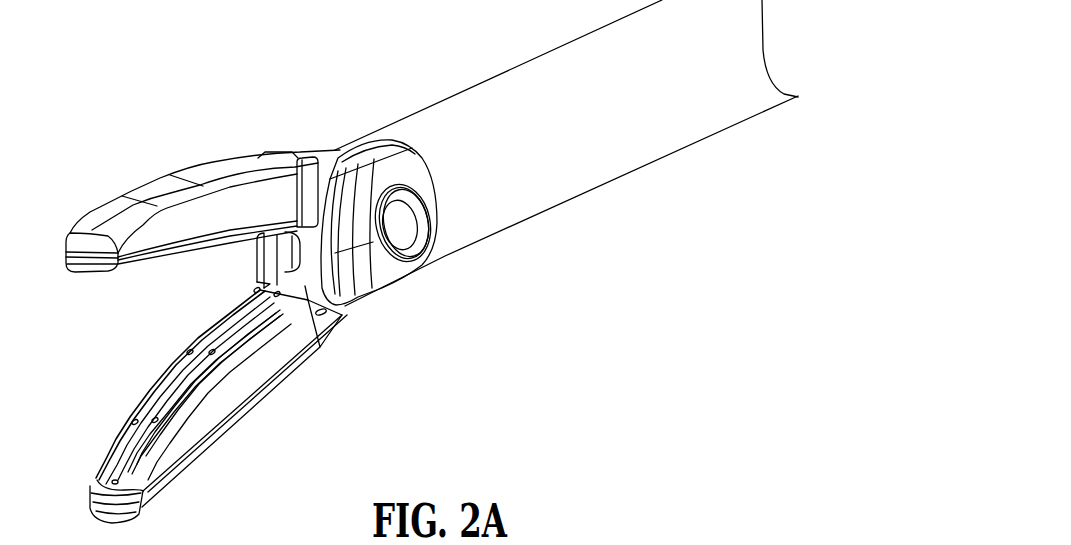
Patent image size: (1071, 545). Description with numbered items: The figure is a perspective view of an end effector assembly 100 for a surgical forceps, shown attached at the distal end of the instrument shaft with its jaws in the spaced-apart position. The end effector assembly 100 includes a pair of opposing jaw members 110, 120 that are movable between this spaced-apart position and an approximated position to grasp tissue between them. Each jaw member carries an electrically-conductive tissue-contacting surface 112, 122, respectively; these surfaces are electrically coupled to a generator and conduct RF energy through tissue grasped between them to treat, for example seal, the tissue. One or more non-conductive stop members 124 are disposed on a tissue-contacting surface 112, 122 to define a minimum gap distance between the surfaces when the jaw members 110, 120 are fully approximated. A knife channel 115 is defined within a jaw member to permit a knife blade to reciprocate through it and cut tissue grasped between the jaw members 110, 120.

The end effector assembly 100 is at (299, 107).
The jaw member 110 is at (222, 212).
The tissue-contacting surface 112 is at (100, 274).
The knife channel 115 is at (170, 397).
The jaw member 120 is at (243, 383).
The tissue-contacting surface 122 is at (108, 464).
The non-conductive stop members 124 is at (190, 349).